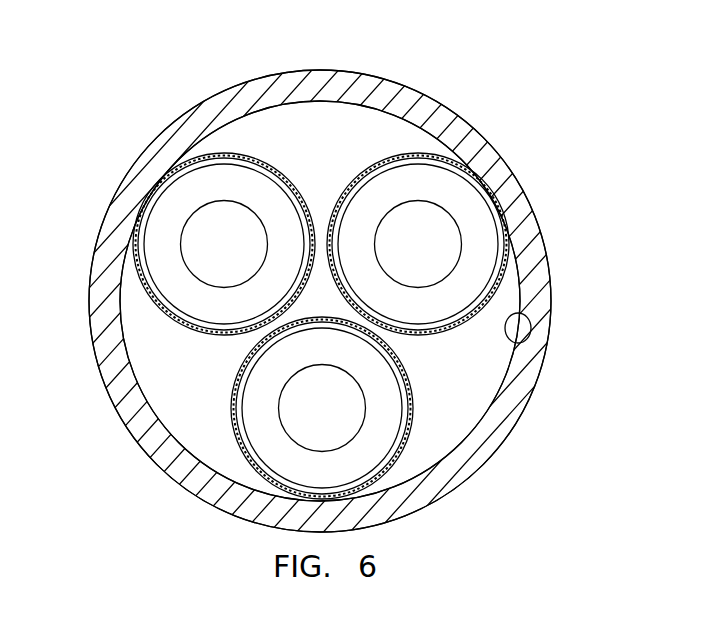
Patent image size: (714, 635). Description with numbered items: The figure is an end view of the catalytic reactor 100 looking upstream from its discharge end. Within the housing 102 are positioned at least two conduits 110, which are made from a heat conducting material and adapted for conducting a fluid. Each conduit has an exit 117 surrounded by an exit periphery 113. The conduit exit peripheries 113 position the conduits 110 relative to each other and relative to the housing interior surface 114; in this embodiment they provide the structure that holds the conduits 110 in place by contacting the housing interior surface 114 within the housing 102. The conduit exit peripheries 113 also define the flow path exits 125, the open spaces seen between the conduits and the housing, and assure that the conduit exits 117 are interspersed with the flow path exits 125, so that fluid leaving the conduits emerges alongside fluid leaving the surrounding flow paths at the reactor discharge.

The catalytic reactor 100 is at (478, 101).
The housing 102 is at (527, 183).
The conduits 110 is at (160, 263).
The exit periphery 113 is at (347, 188).
The housing interior surface 114 is at (512, 352).
The exit 117 is at (225, 241).
The flow path exits 125 is at (356, 137).